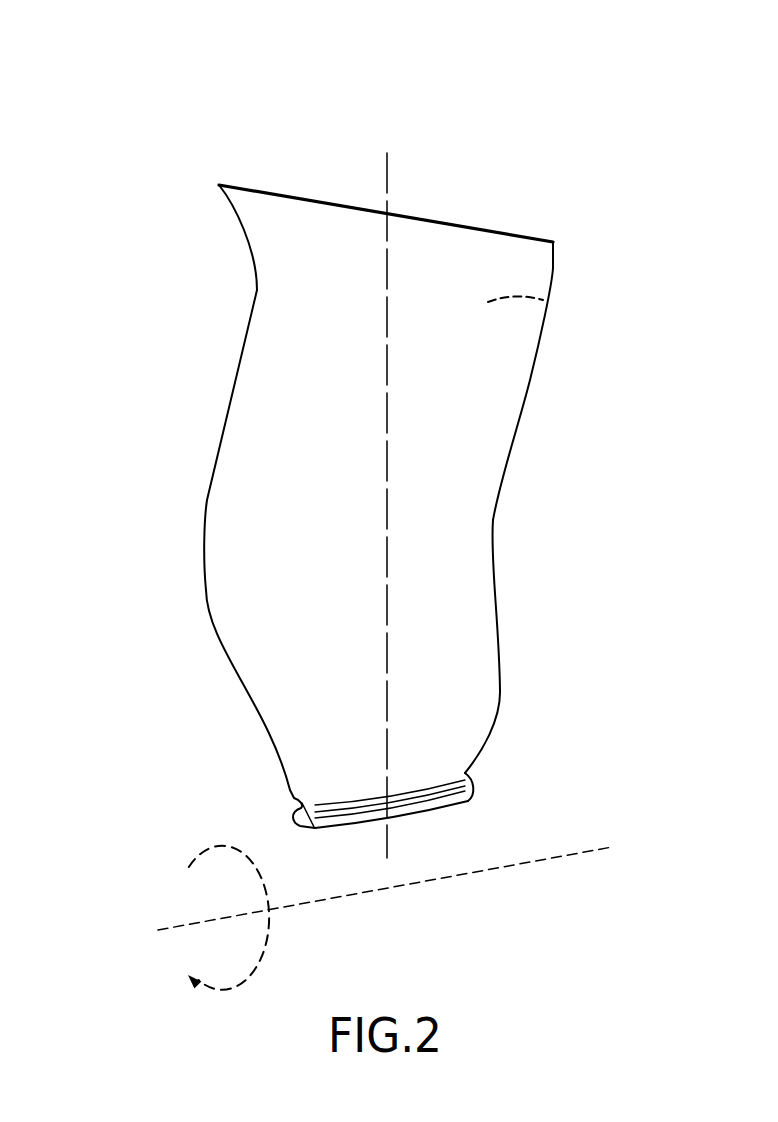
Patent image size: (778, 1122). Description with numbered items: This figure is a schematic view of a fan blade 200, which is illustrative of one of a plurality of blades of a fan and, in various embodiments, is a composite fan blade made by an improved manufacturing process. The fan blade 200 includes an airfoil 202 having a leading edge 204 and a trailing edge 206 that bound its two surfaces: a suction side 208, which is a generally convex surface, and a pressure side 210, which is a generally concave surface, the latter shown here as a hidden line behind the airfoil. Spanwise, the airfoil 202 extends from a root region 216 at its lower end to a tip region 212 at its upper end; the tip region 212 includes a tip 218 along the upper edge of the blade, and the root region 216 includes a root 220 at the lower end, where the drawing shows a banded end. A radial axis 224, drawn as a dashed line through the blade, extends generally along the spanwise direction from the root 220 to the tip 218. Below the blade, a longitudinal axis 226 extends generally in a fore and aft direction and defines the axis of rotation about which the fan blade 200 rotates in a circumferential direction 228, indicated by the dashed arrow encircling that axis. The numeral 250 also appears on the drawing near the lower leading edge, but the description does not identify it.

The fan blade 200 is at (140, 100).
The airfoil 202 is at (538, 580).
The leading edge 204 is at (213, 462).
The trailing edge 206 is at (497, 490).
The suction side 208 is at (495, 381).
The pressure side 210 is at (545, 305).
The tip region 212 is at (212, 224).
The root region 216 is at (248, 781).
The tip 218 is at (342, 204).
The root 220 is at (465, 775).
The radial axis 224 is at (388, 190).
The longitudinal axis 226 is at (547, 857).
The circumferential direction 228 is at (270, 933).
The trailing edge 250 is at (230, 720).